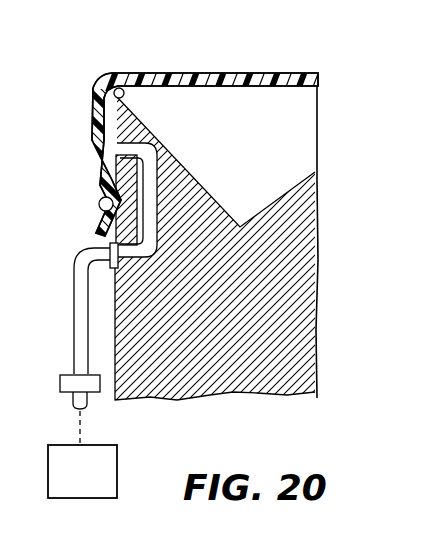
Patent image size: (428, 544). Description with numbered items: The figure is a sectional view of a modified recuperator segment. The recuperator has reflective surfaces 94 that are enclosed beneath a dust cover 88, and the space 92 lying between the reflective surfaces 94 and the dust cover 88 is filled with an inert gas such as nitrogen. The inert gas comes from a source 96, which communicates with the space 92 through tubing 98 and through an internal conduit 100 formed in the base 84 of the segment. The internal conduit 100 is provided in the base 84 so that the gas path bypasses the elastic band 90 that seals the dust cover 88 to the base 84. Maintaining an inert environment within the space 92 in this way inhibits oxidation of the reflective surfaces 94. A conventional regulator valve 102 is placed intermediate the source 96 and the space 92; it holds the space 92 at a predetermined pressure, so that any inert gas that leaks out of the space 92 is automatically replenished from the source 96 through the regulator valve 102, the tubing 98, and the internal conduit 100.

The base 84 is at (300, 268).
The dust cover 88 is at (258, 72).
The elastic band 90 is at (99, 205).
The space 92 is at (265, 141).
The reflective surfaces 94 is at (214, 208).
The source 96 is at (117, 478).
The tubing 98 is at (101, 108).
The internal conduit 100 is at (134, 267).
The regulator valve 102 is at (72, 396).